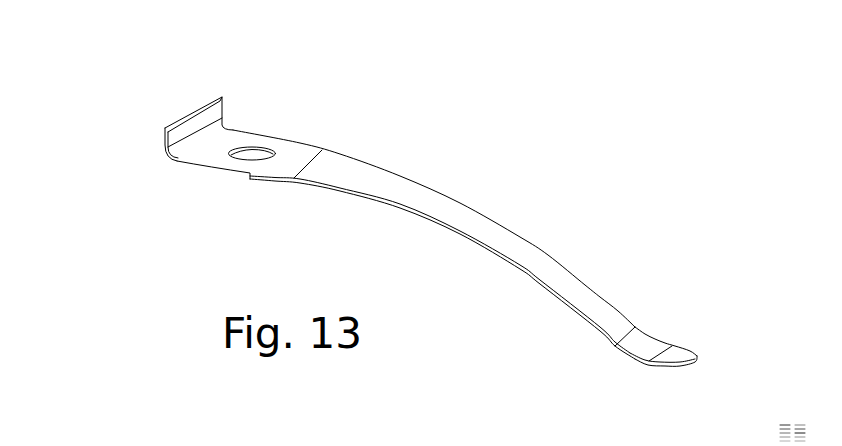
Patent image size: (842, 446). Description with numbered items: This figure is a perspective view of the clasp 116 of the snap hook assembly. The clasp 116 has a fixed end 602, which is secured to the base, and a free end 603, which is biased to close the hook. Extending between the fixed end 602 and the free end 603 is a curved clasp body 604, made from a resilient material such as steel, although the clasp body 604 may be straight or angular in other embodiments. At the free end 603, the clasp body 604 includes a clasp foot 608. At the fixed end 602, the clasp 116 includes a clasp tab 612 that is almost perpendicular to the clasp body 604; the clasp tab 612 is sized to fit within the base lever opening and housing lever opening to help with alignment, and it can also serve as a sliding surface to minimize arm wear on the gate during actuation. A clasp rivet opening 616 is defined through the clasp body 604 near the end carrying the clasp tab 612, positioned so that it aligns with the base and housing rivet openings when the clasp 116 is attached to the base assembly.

The clasp 116 is at (110, 103).
The clasp tab 612 is at (193, 115).
The clasp rivet opening 616 is at (249, 152).
The fixed end 602 is at (217, 162).
The clasp body 604 is at (505, 240).
The clasp foot 608 is at (677, 358).
The free end 603 is at (655, 366).